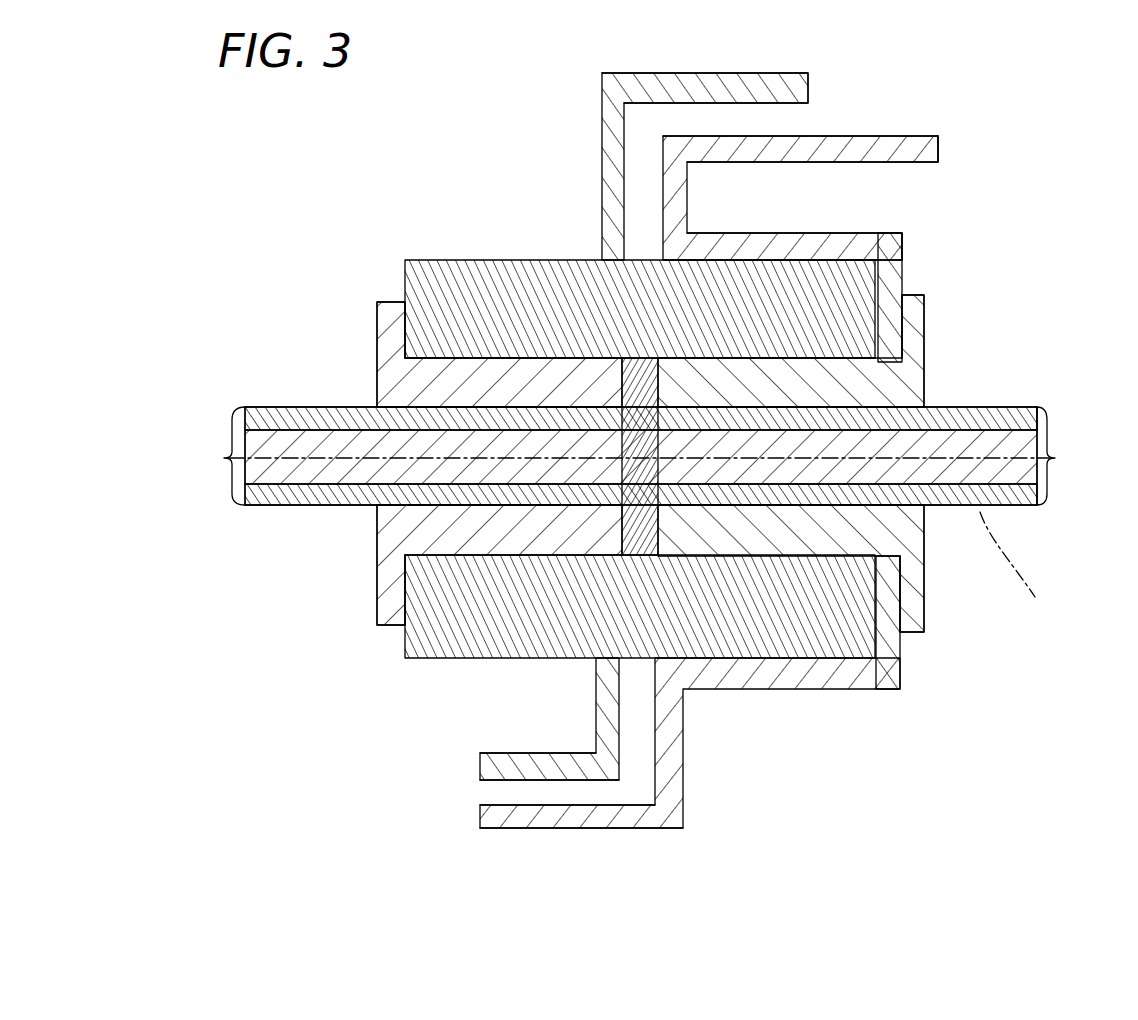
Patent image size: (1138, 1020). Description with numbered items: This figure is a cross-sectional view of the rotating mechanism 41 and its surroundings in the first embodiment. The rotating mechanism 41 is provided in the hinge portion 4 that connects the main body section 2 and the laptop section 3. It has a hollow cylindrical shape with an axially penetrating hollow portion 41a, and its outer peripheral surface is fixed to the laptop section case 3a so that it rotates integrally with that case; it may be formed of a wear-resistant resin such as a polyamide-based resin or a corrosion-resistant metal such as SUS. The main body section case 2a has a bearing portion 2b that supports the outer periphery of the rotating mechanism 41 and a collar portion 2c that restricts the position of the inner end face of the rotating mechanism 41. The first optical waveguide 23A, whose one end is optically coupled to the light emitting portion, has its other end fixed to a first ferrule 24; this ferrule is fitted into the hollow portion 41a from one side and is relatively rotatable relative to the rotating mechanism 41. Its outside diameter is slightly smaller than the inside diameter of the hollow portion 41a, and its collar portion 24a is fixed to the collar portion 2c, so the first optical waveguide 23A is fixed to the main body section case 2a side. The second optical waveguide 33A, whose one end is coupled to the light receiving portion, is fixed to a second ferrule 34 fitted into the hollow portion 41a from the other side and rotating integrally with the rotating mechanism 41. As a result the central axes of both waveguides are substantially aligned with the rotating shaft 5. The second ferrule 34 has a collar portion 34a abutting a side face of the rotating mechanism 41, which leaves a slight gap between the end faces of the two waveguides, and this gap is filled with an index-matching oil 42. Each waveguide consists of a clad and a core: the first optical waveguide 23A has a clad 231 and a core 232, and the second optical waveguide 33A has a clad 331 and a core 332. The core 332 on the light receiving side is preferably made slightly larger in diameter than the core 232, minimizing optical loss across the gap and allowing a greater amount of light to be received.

The main body section 2 is at (677, 708).
The main body section case 2a is at (765, 145).
The bearing portion 2b is at (835, 240).
The collar portion 2c is at (893, 290).
The laptop section 3 is at (605, 695).
The laptop section case 3a is at (605, 145).
The hinge portion 4 is at (925, 122).
The rotating shaft 5 is at (1015, 562).
The first optical waveguide 23A is at (1055, 458).
The clad 231 is at (995, 415).
The core 232 is at (985, 500).
The first ferrule 24 is at (900, 385).
The collar portion 24a is at (917, 325).
The second optical waveguide 33A is at (222, 458).
The clad 331 is at (320, 412).
The core 332 is at (295, 482).
The second ferrule 34 is at (430, 385).
The collar portion 34a is at (390, 320).
The rotating mechanism 41 is at (500, 275).
The hollow portion 41a is at (547, 360).
The index-matching oil 42 is at (655, 362).